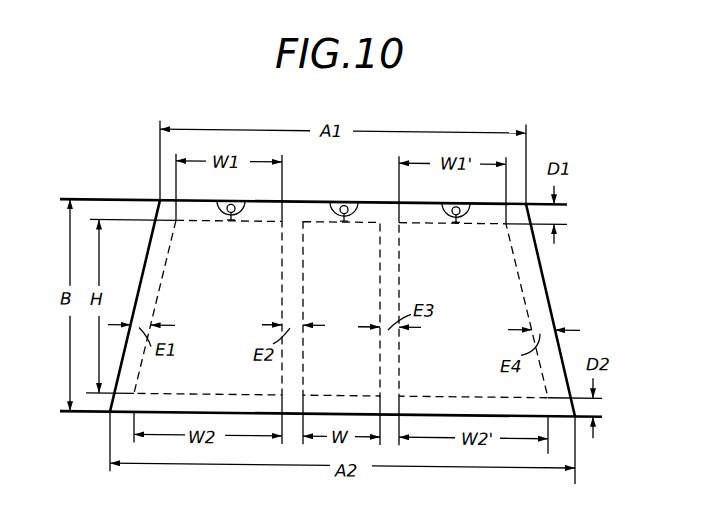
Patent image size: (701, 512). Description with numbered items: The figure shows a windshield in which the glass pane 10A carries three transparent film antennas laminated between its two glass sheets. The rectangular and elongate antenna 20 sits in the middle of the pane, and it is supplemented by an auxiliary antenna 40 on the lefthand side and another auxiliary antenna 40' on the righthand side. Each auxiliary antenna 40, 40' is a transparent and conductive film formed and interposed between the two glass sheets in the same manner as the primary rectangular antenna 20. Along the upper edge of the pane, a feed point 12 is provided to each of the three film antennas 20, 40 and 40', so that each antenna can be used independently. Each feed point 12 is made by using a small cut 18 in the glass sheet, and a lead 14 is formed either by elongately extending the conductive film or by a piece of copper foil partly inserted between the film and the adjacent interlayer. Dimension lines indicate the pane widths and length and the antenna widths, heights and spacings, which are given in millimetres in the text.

The glass pane 10A is at (540, 273).
The feed point 12 is at (224, 203).
The lead 14 is at (237, 220).
The small cut 18 is at (223, 218).
The rectangular antenna 20 is at (350, 367).
The auxiliary antenna 40 is at (197, 307).
The auxiliary antenna 40' is at (493, 310).